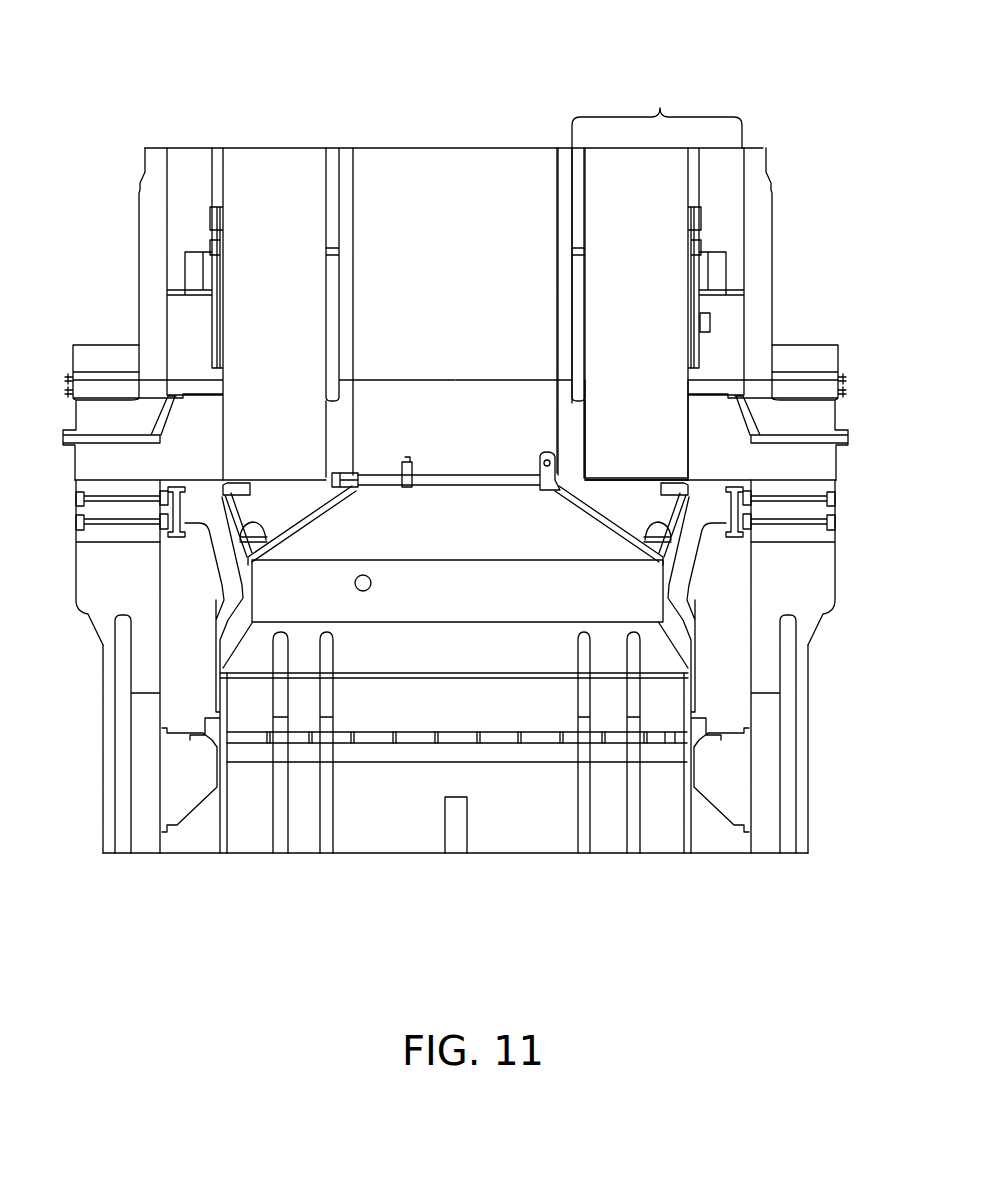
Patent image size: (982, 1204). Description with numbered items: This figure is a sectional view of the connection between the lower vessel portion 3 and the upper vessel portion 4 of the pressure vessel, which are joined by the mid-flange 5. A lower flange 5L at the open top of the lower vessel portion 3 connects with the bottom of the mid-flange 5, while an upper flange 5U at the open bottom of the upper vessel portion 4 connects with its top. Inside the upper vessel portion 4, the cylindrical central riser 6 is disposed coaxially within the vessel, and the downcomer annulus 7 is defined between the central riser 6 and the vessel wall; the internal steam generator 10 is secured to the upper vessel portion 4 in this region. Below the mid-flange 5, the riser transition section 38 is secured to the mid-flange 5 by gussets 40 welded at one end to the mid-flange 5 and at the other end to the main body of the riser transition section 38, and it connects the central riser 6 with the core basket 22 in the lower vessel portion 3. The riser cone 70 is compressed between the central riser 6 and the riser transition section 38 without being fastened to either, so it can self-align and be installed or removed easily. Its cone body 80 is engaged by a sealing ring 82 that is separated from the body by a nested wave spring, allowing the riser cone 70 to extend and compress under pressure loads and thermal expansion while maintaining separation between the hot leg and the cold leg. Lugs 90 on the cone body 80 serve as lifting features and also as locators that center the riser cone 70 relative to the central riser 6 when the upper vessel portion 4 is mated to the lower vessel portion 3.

The lower vessel portion 3 is at (807, 763).
The upper vessel portion 4 is at (775, 207).
The mid-flange 5 is at (815, 513).
The upper flange 5U is at (826, 425).
The lower flange 5L is at (823, 562).
The central riser 6 is at (563, 192).
The downcomer annulus 7 is at (660, 108).
The steam generator 10 is at (638, 415).
The core basket 22 is at (603, 816).
The riser transition section 38 is at (295, 598).
The gussets 40 is at (652, 512).
The riser cone 70 is at (343, 465).
The cone body 80 is at (368, 510).
The sealing ring 82 is at (380, 485).
The lugs 90 is at (545, 462).